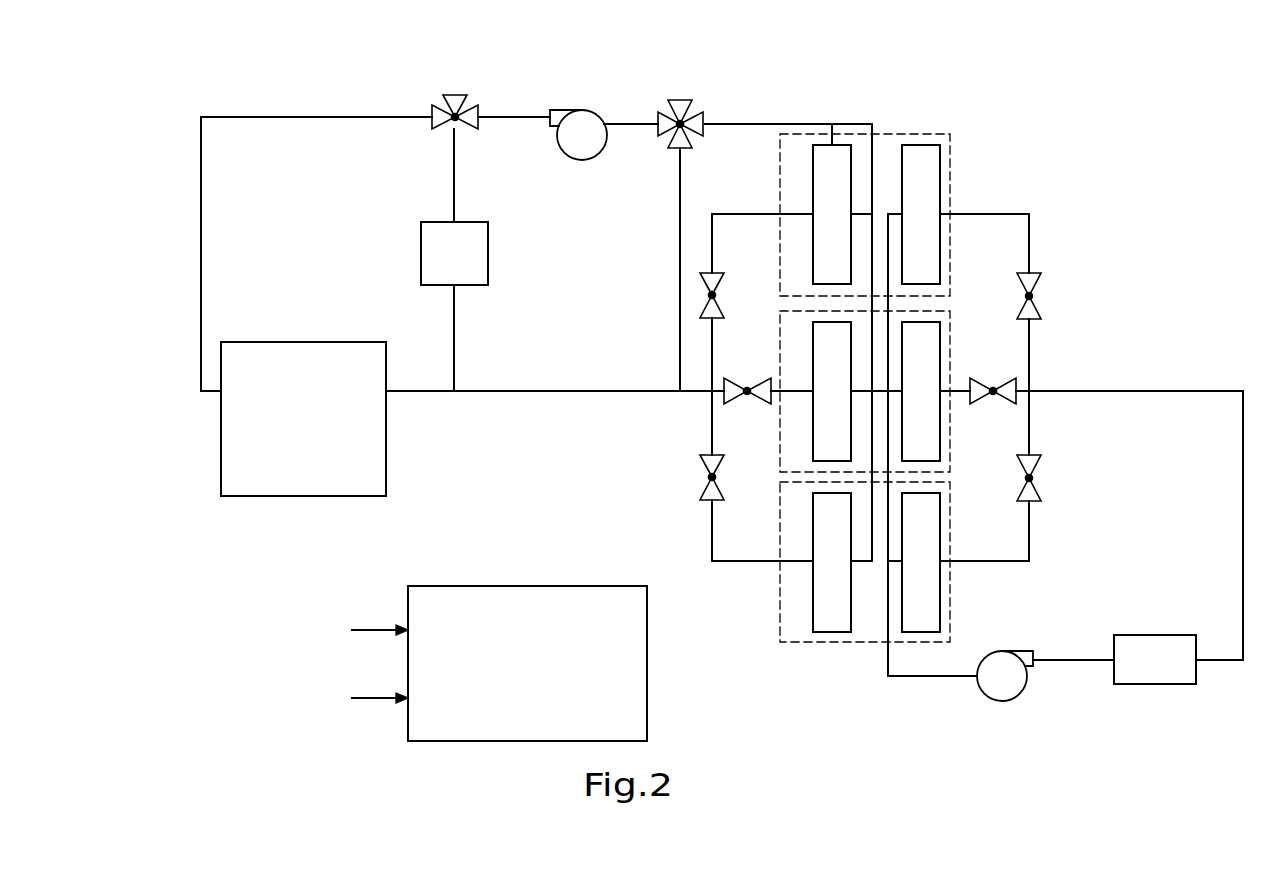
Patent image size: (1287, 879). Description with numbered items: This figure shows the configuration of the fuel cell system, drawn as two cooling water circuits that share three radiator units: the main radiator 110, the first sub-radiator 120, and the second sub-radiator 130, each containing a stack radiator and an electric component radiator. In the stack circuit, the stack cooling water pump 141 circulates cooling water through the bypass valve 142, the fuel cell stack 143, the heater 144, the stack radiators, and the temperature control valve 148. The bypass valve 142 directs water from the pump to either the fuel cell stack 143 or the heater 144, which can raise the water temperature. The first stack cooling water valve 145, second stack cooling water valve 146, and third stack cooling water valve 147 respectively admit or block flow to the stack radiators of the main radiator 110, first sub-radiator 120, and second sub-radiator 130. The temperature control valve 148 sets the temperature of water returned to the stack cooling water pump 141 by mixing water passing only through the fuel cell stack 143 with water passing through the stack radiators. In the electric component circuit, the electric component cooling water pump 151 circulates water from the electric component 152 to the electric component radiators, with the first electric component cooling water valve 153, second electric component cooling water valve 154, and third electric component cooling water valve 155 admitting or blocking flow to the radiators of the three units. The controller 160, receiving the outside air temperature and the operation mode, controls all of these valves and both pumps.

The main radiator 110 is at (950, 325).
The first sub-radiator 120 is at (925, 136).
The second sub-radiator 130 is at (950, 603).
The stack cooling water pump 141 is at (582, 112).
The bypass valve 142 is at (456, 97).
The fuel cell stack 143 is at (303, 344).
The heater 144 is at (488, 255).
The first stack cooling water valve 145 is at (745, 405).
The second stack cooling water valve 146 is at (722, 288).
The third stack cooling water valve 147 is at (701, 488).
The temperature control valve 148 is at (681, 102).
The electric component cooling water pump 151 is at (1000, 703).
The electric component 152 is at (1155, 637).
The first electric component cooling water valve 153 is at (983, 405).
The second electric component cooling water valve 154 is at (1040, 280).
The third electric component cooling water valve 155 is at (1040, 462).
The controller 160 is at (543, 588).